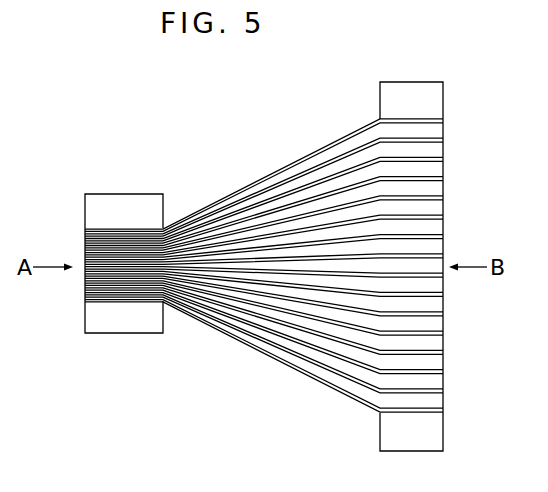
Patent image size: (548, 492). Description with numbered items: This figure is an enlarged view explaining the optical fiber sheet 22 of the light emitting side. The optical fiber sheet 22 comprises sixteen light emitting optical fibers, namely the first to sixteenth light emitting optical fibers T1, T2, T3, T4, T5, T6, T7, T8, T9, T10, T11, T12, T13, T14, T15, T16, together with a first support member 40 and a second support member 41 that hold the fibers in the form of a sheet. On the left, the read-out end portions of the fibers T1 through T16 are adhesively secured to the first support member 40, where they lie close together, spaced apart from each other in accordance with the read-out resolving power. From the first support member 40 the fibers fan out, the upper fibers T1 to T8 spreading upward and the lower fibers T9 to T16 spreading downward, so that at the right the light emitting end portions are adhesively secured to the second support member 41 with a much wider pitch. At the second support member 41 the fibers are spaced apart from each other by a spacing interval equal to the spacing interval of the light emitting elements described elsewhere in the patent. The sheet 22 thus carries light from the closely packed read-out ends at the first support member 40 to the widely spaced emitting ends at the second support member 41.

The first support member 40 is at (130, 325).
The second support member 41 is at (432, 438).
The optical fiber sheet 22 is at (264, 267).
The first light emitting optical fiber T1 is at (367, 123).
The second light emitting optical fiber T2 is at (355, 150).
The third light emitting optical fiber T3 is at (333, 176).
The fourth light emitting optical fiber T4 is at (304, 200).
The fifth light emitting optical fiber T5 is at (280, 222).
The sixth light emitting optical fiber T6 is at (252, 239).
The seventh light emitting optical fiber T7 is at (225, 252).
The eighth light emitting optical fiber T8 is at (208, 261).
The ninth light emitting optical fiber T9 is at (207, 270).
The tenth light emitting optical fiber T10 is at (224, 279).
The eleventh light emitting optical fiber T11 is at (246, 292).
The twelfth light emitting optical fiber T12 is at (270, 308).
The thirteenth light emitting optical fiber T13 is at (293, 326).
The fourteenth light emitting optical fiber T14 is at (314, 347).
The fifteenth light emitting optical fiber T15 is at (338, 373).
The sixteenth light emitting optical fiber T16 is at (362, 401).